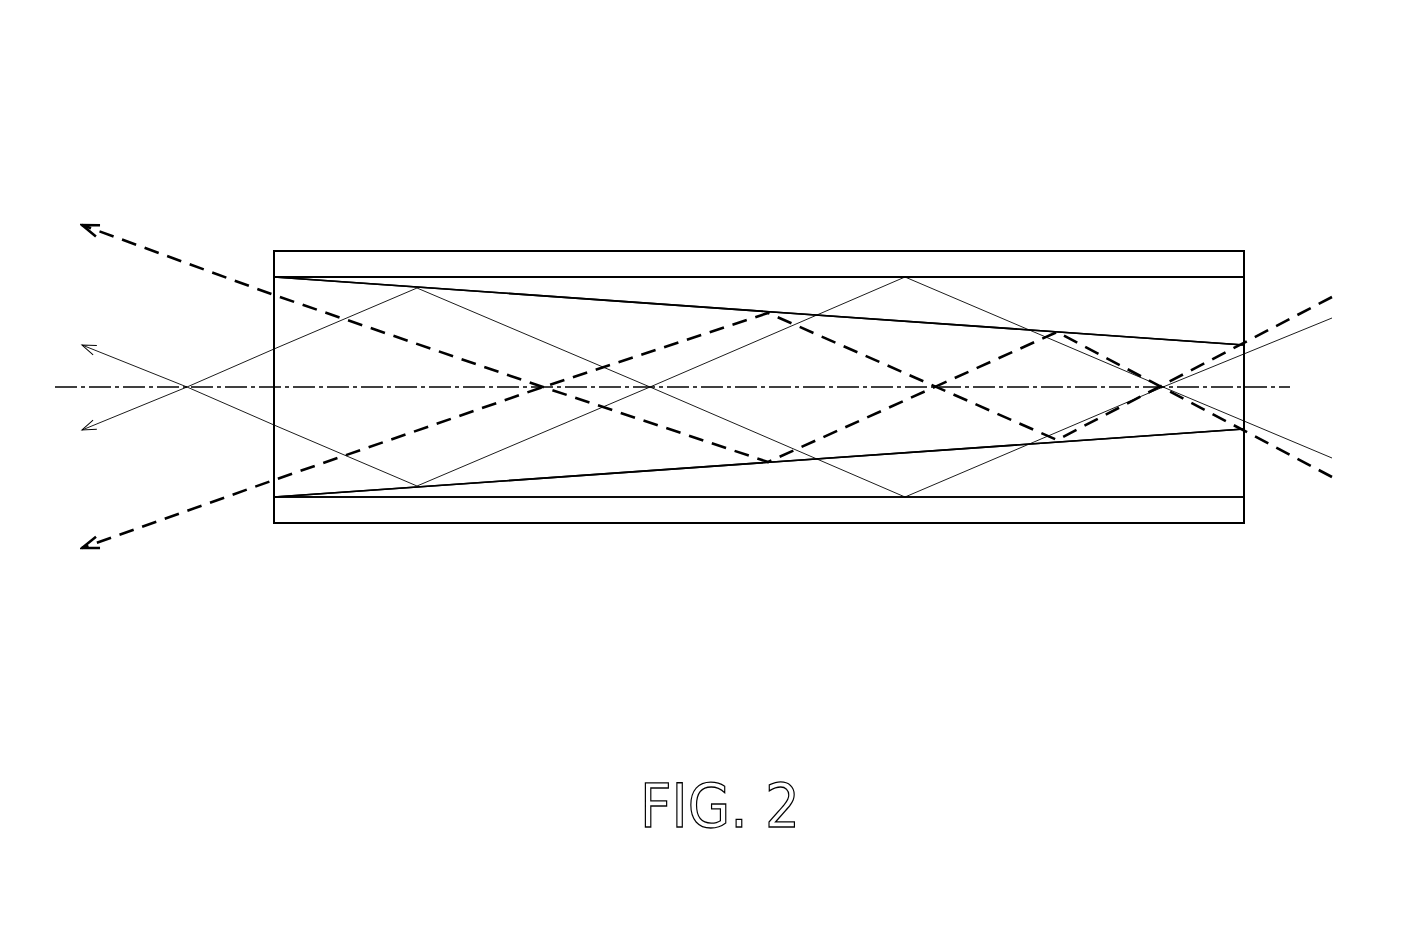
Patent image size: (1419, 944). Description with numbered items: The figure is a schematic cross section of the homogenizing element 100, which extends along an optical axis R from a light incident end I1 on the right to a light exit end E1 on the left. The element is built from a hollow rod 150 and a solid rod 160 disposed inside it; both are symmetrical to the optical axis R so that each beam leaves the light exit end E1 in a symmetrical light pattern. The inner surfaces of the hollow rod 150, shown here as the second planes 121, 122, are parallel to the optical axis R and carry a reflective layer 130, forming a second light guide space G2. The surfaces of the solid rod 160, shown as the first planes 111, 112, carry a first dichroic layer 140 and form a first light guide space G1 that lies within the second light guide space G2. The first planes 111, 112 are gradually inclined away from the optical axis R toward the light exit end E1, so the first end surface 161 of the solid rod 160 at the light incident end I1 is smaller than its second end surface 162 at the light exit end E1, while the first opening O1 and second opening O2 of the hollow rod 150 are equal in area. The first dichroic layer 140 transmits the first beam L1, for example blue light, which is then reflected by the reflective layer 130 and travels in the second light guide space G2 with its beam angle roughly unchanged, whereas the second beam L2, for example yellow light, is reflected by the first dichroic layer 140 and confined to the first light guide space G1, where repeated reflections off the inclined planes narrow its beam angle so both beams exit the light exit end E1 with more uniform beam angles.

The homogenizing element 100 is at (140, 99).
The first plane 111 is at (1087, 333).
The first plane 112 is at (1097, 443).
The second plane 121 is at (1122, 281).
The second plane 122 is at (1133, 496).
The reflective layer 130 is at (1200, 280).
The first dichroic layer 140 is at (697, 305).
The hollow rod 150 is at (613, 260).
The solid rod 160 is at (637, 444).
The first end surface 161 is at (1246, 405).
The second end surface 162 is at (272, 450).
The light exit end E1 is at (253, 278).
The second opening O2 is at (272, 276).
The light incident end I1 is at (1259, 277).
The first opening O1 is at (1246, 477).
The first beam L1 is at (1322, 323).
The second beam L2 is at (1330, 296).
The first light guide space G1 is at (567, 444).
The second light guide space G2 is at (808, 476).
The optical axis R is at (660, 389).